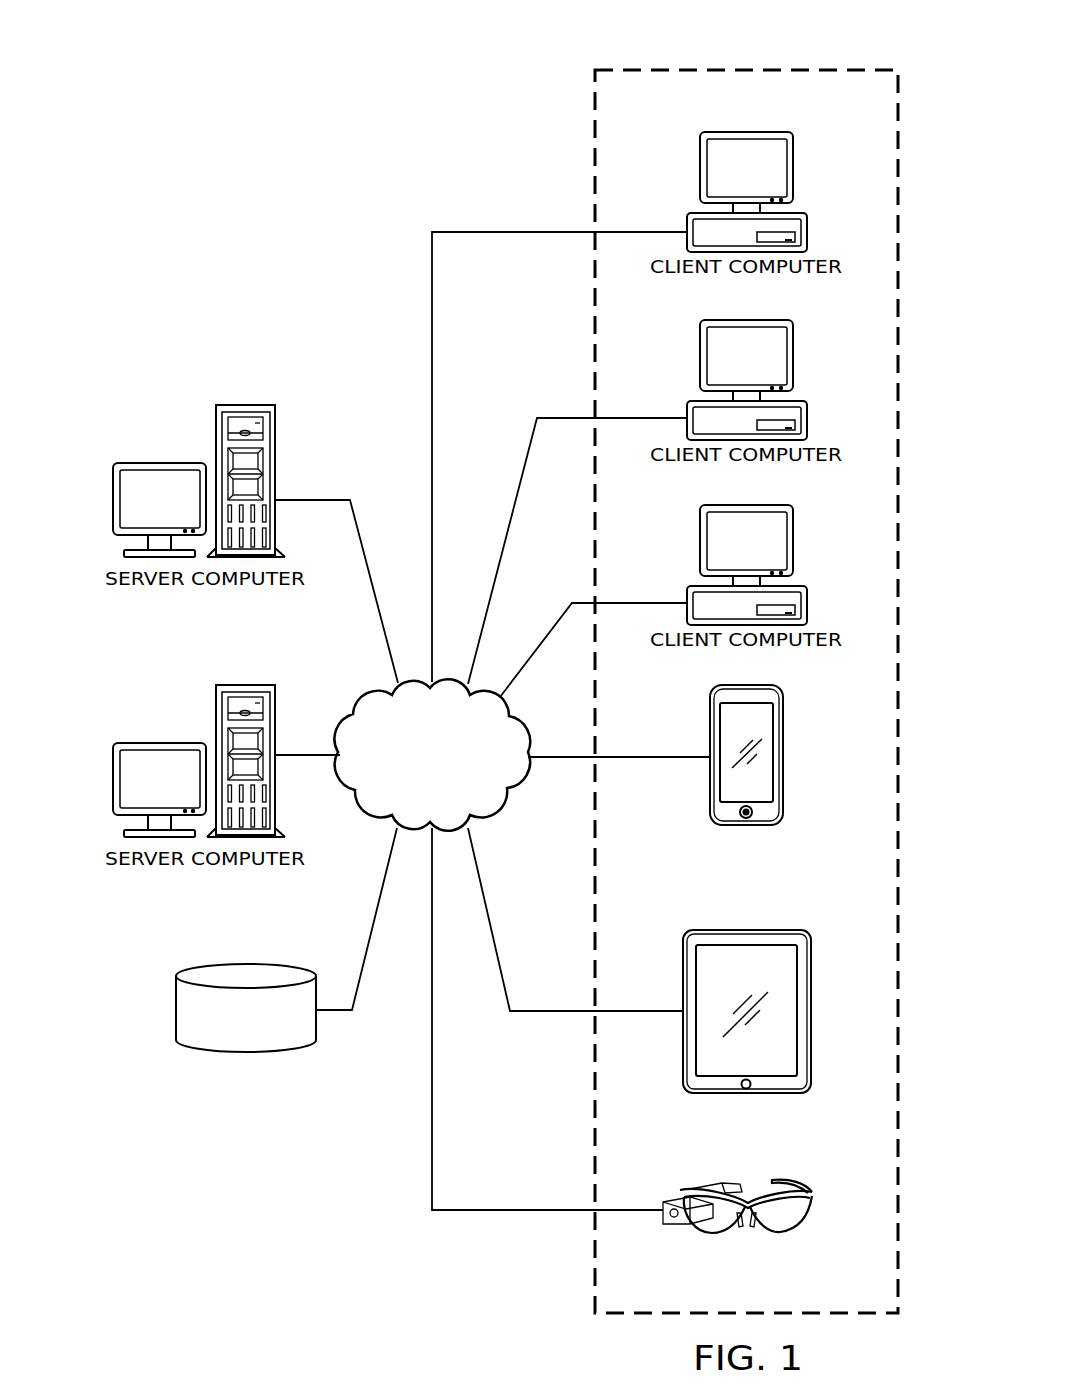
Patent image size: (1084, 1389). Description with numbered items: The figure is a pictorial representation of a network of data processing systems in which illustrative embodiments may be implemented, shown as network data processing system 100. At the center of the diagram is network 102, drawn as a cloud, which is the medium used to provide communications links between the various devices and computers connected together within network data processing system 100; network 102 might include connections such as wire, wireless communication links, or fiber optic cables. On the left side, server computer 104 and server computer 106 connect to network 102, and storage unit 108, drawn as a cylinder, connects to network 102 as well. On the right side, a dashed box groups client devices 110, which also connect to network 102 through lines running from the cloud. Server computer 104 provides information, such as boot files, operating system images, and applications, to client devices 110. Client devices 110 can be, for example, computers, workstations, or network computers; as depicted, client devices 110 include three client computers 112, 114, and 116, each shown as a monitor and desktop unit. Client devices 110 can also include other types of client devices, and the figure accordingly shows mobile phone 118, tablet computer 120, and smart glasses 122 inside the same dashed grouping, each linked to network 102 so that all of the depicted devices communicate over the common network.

The network data processing system 100 is at (264, 165).
The network 102 is at (411, 789).
The server computer 104 is at (158, 463).
The server computer 106 is at (158, 743).
The storage unit 108 is at (245, 1052).
The client devices 110 is at (803, 64).
The client computer 112 is at (794, 168).
The client computer 114 is at (794, 356).
The client computer 116 is at (794, 541).
The mobile phone 118 is at (783, 775).
The tablet computer 120 is at (811, 1023).
The smart glasses 122 is at (813, 1210).